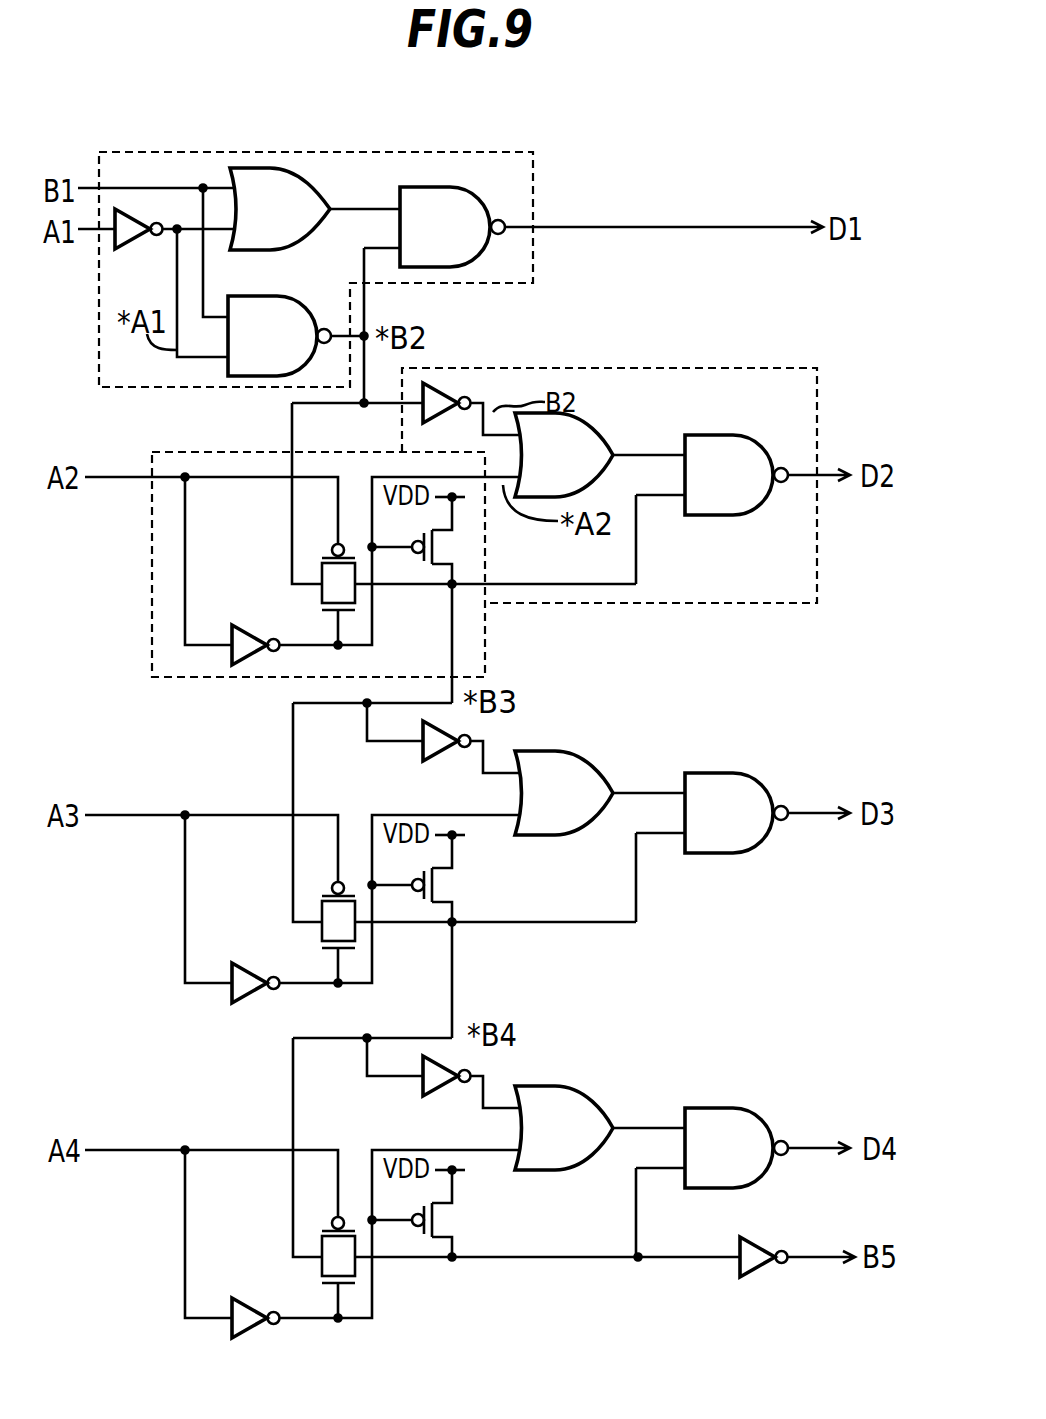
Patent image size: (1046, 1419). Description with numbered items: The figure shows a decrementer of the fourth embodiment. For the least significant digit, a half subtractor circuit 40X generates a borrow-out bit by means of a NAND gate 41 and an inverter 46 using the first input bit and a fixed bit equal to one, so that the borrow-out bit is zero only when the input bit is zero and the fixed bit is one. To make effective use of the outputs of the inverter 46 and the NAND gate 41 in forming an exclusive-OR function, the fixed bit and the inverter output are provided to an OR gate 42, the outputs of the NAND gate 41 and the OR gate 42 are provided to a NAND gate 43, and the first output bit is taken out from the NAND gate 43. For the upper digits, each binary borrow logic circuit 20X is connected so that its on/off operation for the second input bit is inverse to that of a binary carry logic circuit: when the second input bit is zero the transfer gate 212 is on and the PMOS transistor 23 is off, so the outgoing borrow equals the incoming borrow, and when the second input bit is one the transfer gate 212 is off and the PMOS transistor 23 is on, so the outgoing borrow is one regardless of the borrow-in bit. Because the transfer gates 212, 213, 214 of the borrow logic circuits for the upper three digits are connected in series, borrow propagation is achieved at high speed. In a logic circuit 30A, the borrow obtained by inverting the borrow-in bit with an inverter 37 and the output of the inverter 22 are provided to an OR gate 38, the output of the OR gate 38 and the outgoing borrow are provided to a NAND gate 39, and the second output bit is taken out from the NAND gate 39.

The half subtractor circuit 40X is at (318, 152).
The OR gate 42 is at (310, 182).
The NAND gate 43 is at (452, 187).
The inverter 46 is at (133, 241).
The NAND gate 41 is at (282, 296).
The logic circuit 30A is at (608, 368).
The inverter 37 is at (440, 385).
The OR gate 38 is at (588, 422).
The NAND gate 39 is at (733, 435).
The binary borrow logic circuit 20X is at (152, 563).
The inverter 22 is at (235, 628).
The PMOS transistor 23 is at (443, 533).
The transfer gate 212 is at (318, 594).
The transfer gate 213 is at (292, 932).
The transfer gate 214 is at (292, 1267).